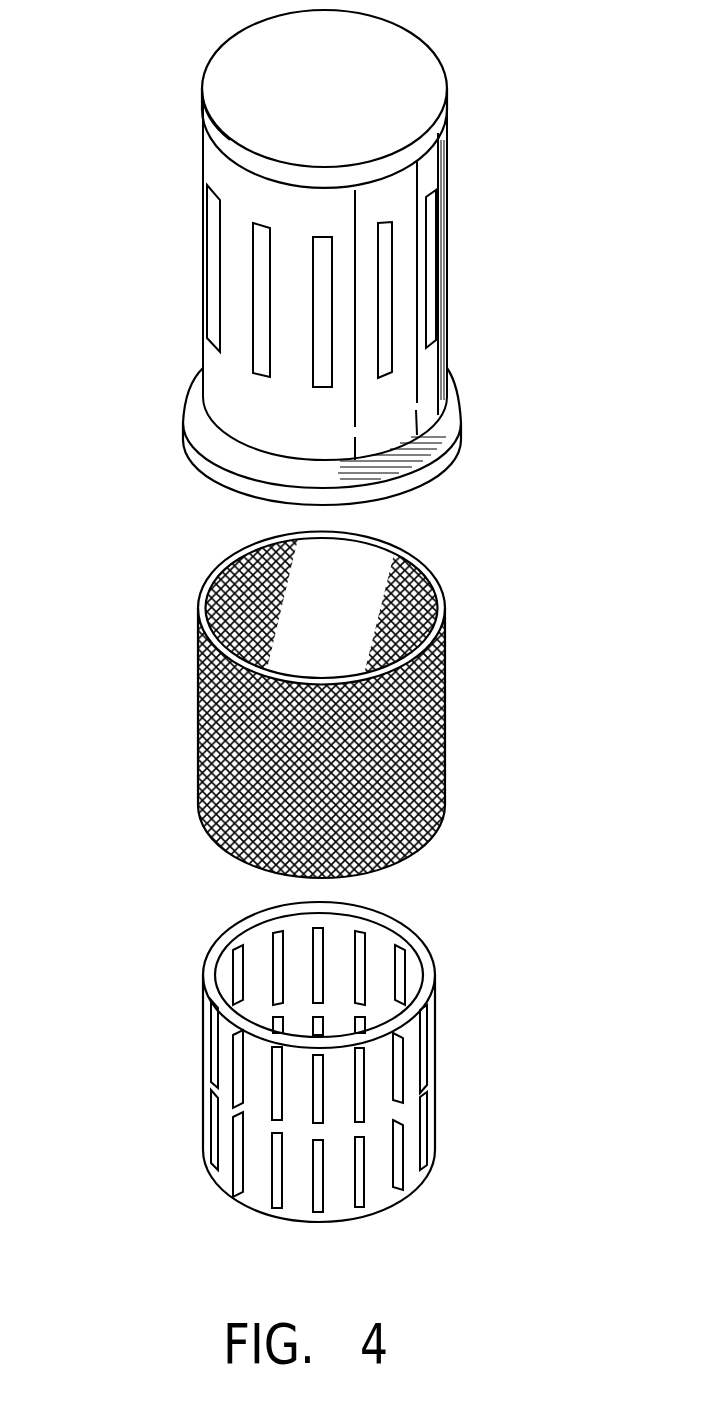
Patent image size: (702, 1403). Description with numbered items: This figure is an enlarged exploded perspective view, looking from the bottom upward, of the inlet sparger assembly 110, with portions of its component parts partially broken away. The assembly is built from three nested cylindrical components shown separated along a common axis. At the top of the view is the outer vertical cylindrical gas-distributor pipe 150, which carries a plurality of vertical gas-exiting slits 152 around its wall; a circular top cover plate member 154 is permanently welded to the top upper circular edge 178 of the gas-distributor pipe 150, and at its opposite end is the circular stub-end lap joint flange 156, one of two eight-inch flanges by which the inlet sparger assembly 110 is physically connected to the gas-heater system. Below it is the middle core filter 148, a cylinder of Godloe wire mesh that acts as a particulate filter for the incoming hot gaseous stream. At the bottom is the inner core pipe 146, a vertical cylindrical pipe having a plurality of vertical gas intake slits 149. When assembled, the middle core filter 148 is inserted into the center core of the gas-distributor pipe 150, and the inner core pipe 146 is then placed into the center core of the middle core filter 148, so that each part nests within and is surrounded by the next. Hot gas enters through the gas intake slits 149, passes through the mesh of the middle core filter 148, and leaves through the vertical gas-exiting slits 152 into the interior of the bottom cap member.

The inlet sparger assembly 110 is at (82, 571).
The inner core pipe 146 is at (205, 1060).
The middle core filter 148 is at (222, 732).
The vertical gas intake slits 149 is at (360, 1163).
The gas-distributor pipe 150 is at (198, 364).
The vertical gas-exiting slits 152 is at (320, 265).
The top cover plate member 154 is at (418, 72).
The stub-end lap joint flange 156 is at (441, 418).
The top upper circular edge 178 is at (207, 116).